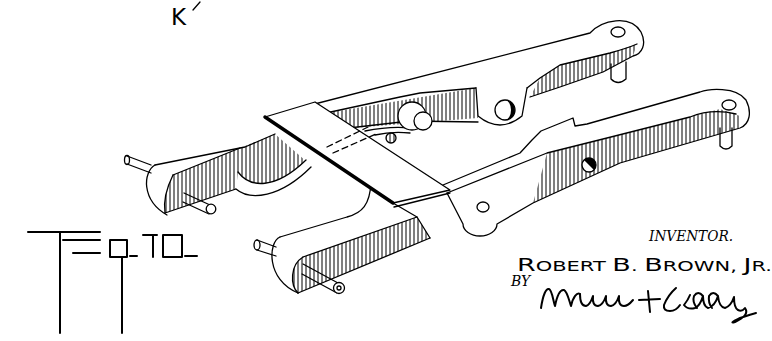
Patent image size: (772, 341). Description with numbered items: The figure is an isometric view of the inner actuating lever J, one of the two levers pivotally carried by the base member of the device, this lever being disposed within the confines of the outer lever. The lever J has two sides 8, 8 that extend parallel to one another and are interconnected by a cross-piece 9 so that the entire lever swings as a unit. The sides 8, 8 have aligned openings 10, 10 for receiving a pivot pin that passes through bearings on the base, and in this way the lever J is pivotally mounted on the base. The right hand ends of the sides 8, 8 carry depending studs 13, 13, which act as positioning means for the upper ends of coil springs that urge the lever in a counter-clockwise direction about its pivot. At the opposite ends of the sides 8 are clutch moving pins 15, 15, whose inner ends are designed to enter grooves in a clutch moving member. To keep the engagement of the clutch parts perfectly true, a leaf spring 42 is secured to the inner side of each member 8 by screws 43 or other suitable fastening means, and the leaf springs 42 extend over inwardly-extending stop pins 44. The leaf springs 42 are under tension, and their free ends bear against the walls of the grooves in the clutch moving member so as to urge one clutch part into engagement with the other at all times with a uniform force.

The sides 8 is at (558, 52).
The cross-piece 9 is at (300, 123).
The aligned openings 10 is at (503, 105).
The depending studs 13 is at (628, 72).
The clutch moving pins 15 is at (129, 154).
The leaf springs 42 is at (283, 194).
The screws 43 is at (418, 100).
The stop pins 44 is at (389, 133).
The inner lever J is at (214, 147).